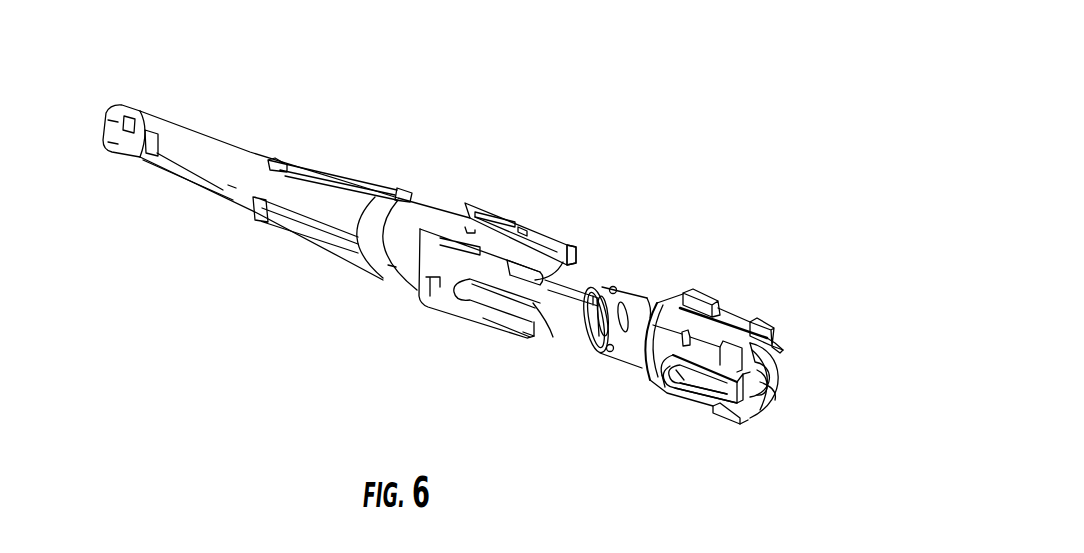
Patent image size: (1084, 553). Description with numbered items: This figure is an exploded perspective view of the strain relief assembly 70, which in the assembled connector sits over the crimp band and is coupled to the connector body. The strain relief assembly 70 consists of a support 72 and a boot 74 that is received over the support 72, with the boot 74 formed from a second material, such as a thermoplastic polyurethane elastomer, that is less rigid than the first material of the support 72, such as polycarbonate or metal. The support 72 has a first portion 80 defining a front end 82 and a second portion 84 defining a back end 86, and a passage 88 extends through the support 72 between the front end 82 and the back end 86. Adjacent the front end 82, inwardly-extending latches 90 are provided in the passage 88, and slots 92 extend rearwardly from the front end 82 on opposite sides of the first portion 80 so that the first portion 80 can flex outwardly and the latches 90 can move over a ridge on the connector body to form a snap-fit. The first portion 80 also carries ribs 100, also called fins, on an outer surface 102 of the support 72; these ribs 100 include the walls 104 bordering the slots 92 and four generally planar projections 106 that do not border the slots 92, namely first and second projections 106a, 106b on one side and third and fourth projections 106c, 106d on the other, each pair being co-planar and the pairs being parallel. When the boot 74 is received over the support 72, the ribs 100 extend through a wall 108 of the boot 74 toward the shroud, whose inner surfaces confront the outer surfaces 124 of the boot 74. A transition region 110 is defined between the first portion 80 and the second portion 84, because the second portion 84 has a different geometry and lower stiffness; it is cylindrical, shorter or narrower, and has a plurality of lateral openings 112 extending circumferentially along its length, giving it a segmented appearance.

The strain relief assembly 70 is at (640, 125).
The support 72 is at (636, 184).
The boot 74 is at (196, 28).
The first portion 80 is at (732, 312).
The front end 82 is at (777, 342).
The second portion 84 is at (652, 302).
The back end 86 is at (602, 288).
The passage 88 is at (750, 377).
The latches 90 is at (763, 403).
The slots 92 is at (780, 357).
The rib 100 is at (670, 387).
The outer surface 102 is at (733, 347).
The walls 104 is at (674, 438).
The projections 106 is at (602, 418).
The first projection 106a is at (660, 362).
The second projection 106b is at (733, 423).
The third projection 106c is at (712, 300).
The fourth projection 106d is at (777, 393).
The wall 108 is at (586, 244).
The transition region 110 is at (675, 298).
The lateral openings 112 is at (580, 337).
The outer surfaces 124 is at (521, 233).